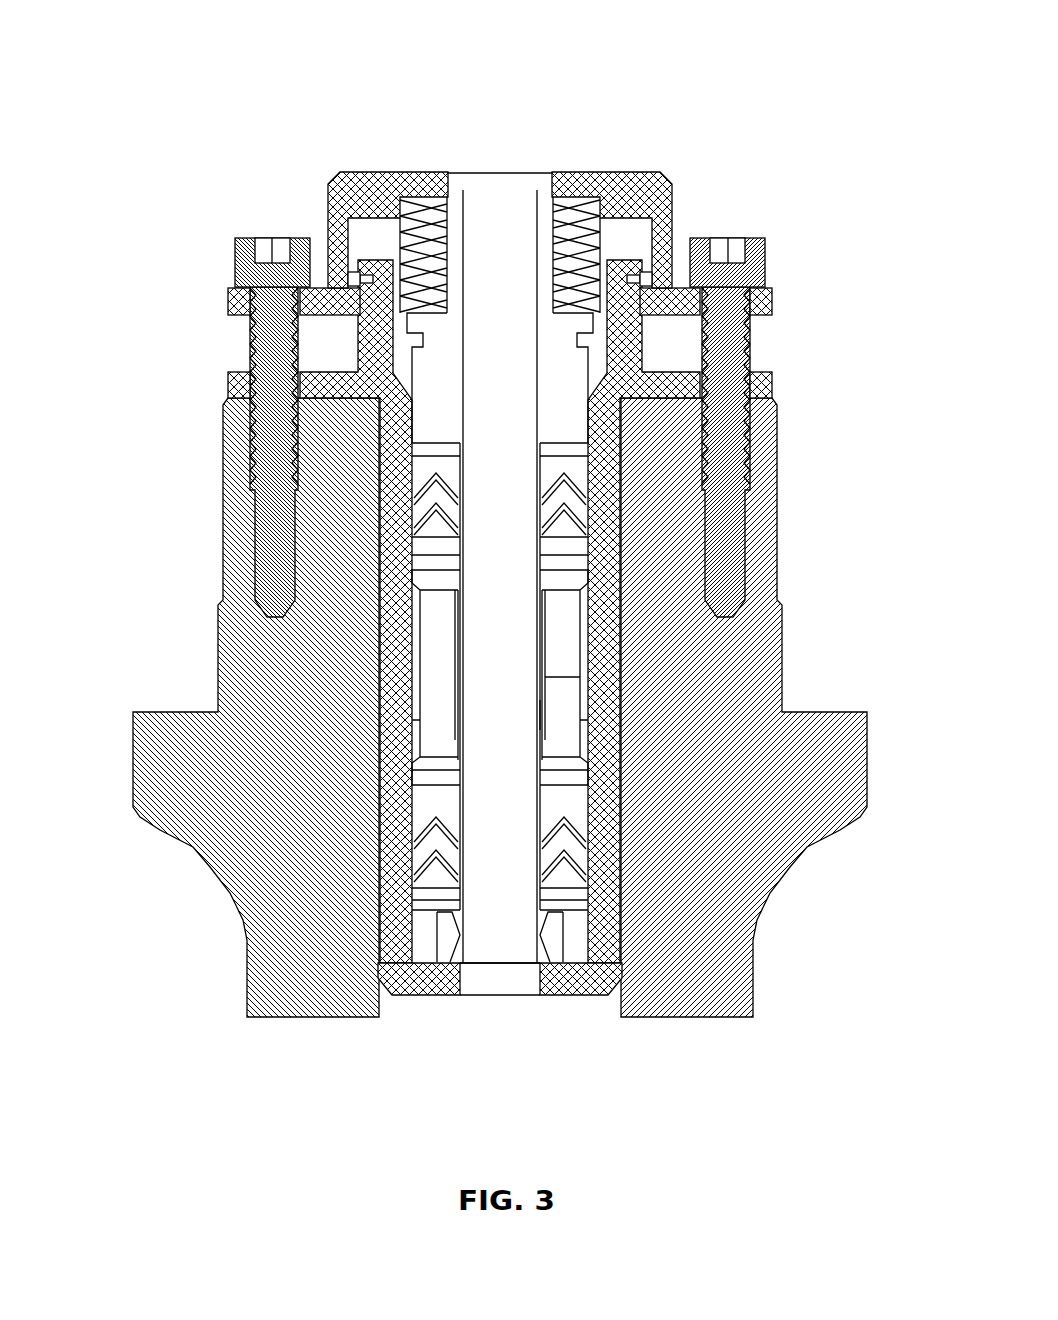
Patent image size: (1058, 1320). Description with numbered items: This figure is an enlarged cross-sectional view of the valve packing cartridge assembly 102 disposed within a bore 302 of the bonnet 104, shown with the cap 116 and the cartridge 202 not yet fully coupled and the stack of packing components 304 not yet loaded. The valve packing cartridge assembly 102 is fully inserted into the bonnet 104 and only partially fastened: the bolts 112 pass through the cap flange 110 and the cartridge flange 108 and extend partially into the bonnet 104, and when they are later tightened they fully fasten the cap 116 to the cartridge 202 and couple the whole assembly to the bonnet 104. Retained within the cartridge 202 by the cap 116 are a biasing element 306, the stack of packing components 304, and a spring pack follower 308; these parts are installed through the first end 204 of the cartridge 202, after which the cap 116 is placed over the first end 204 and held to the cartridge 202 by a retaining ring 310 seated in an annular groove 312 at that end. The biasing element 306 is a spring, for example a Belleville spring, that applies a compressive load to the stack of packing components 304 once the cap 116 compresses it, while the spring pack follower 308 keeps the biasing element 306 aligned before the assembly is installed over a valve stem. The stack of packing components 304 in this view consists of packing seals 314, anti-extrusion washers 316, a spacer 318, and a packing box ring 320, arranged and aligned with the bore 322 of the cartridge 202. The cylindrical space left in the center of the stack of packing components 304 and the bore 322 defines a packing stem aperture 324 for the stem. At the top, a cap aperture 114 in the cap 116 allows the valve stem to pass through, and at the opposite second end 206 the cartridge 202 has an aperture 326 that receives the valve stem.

The valve packing cartridge assembly 102 is at (312, 85).
The bonnet 104 is at (245, 977).
The cartridge flange 108 is at (772, 385).
The cap flange 110 is at (766, 262).
The bolts 112 is at (235, 262).
The cap aperture 114 is at (552, 172).
The cap 116 is at (392, 183).
The cartridge 202 is at (390, 580).
The first end 204 is at (355, 345).
The second end 206 is at (417, 995).
The bore 302 is at (412, 722).
The stack of packing components 304 is at (600, 638).
The biasing element 306 is at (600, 235).
The spring pack follower 308 is at (582, 357).
The retaining ring 310 is at (355, 280).
The annular groove 312 is at (368, 275).
The packing seals 314 is at (412, 510).
The anti-extrusion washers 316 is at (593, 452).
The spacer 318 is at (578, 677).
The packing box ring 320 is at (590, 923).
The bore 322 is at (412, 652).
The packing stem aperture 324 is at (540, 715).
The aperture 326 is at (535, 977).